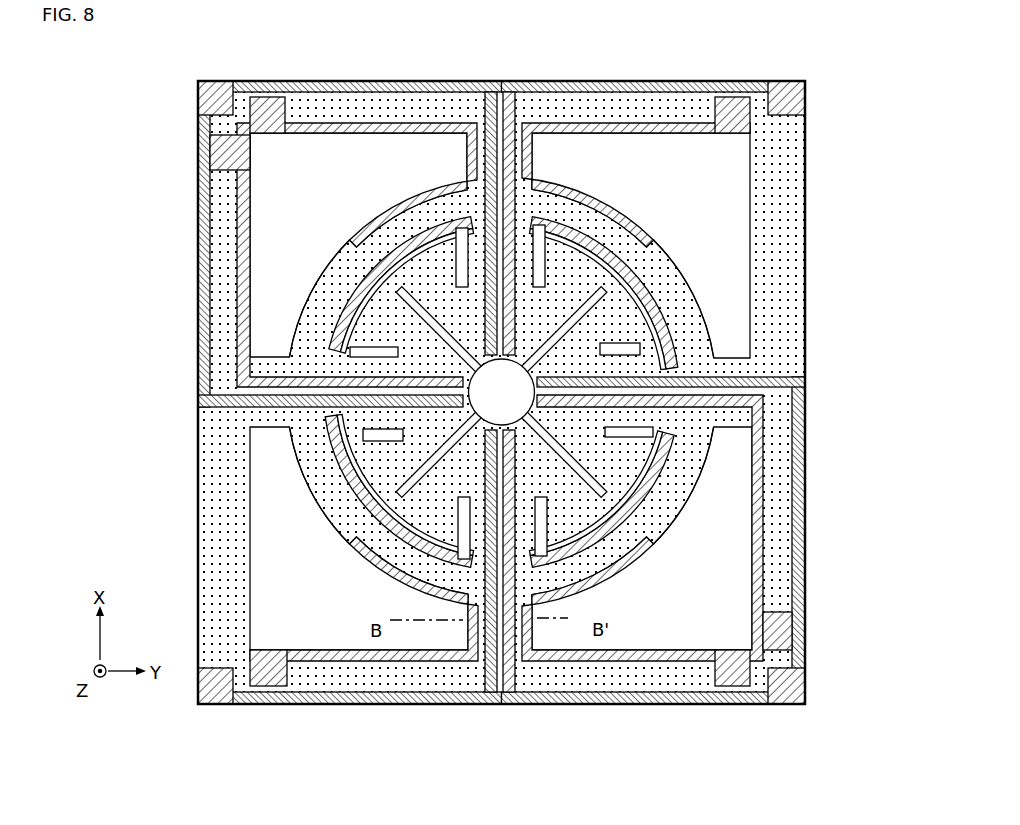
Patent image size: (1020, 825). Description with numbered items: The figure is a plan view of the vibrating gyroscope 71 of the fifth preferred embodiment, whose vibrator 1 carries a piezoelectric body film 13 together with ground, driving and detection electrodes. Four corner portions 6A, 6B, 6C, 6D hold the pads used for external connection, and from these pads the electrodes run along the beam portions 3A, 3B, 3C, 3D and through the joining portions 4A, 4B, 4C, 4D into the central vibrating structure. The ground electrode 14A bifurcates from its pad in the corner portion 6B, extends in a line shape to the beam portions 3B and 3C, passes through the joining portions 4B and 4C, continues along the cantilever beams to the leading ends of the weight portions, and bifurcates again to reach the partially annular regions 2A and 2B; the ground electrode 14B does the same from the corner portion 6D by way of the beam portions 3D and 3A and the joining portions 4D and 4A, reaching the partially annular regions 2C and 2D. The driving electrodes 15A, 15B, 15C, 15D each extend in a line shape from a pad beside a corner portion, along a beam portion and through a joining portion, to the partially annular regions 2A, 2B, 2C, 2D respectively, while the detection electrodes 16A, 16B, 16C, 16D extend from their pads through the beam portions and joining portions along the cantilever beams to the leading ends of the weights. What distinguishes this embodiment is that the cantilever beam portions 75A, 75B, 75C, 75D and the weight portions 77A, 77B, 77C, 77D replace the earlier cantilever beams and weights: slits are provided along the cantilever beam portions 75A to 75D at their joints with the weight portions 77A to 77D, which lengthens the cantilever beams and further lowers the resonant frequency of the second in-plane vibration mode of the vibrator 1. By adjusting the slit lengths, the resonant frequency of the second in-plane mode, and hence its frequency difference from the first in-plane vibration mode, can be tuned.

The vibrator 1 is at (808, 196).
The vibrating gyroscope 71 is at (824, 68).
The partially annular region 2A is at (658, 272).
The partially annular region 2B is at (643, 500).
The partially annular region 2C is at (342, 512).
The partially annular region 2D is at (343, 237).
The beam portion 3A is at (632, 80).
The beam portion 3B is at (793, 277).
The beam portion 3C is at (467, 682).
The beam portion 3D is at (226, 450).
The joining portion 4A is at (535, 160).
The joining portion 4B is at (728, 427).
The joining portion 4C is at (465, 633).
The joining portion 4D is at (272, 355).
The corner portion 6A is at (776, 80).
The corner portion 6B is at (780, 706).
The corner portion 6C is at (242, 706).
The corner portion 6D is at (228, 80).
The piezoelectric body film 13 is at (793, 345).
The ground electrode 14A is at (781, 700).
The ground electrode 14B is at (210, 104).
The driving electrode 15A is at (732, 97).
The driving electrode 15B is at (722, 688).
The driving electrode 15C is at (278, 686).
The driving electrode 15D is at (282, 107).
The detection electrode 16A is at (807, 99).
The detection electrode 16B is at (785, 610).
The detection electrode 16C is at (195, 706).
The detection electrode 16D is at (230, 172).
The cantilever beam portion 75A is at (532, 238).
The cantilever beam portion 75B is at (713, 427).
The cantilever beam portion 75C is at (435, 585).
The cantilever beam portion 75D is at (347, 347).
The weight portion 77A is at (560, 272).
The weight portion 77B is at (617, 460).
The weight portion 77C is at (412, 548).
The weight portion 77D is at (383, 323).